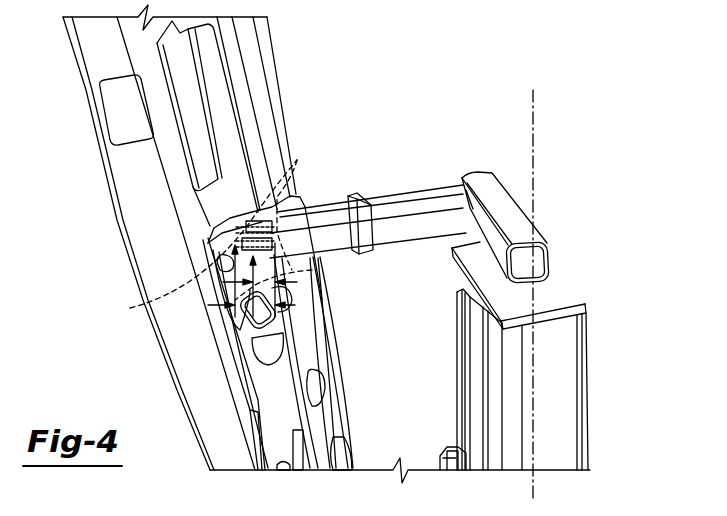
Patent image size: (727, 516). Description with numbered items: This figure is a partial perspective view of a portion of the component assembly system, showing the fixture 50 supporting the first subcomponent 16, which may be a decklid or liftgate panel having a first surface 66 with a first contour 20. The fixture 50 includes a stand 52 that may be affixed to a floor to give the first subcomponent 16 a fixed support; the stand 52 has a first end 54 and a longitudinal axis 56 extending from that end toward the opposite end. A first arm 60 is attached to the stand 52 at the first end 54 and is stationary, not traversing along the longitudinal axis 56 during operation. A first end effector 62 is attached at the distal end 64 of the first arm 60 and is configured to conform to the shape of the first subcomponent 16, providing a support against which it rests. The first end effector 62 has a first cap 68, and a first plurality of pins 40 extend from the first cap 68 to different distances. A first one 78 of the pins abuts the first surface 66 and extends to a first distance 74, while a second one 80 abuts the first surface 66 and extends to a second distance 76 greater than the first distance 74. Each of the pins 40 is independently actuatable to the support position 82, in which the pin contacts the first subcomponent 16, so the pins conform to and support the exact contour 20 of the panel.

The first subcomponent 16 is at (106, 197).
The first contour 20 is at (233, 221).
The first plurality of pins 40 is at (290, 168).
The fixture 50 is at (567, 246).
The stand 52 is at (588, 441).
The first end 54 is at (598, 338).
The longitudinal axis 56 is at (533, 108).
The first arm 60 is at (497, 200).
The first end effector 62 is at (408, 208).
The distal end 64 is at (463, 165).
The first surface 66 is at (196, 236).
The first cap 68 is at (326, 210).
The first distance 74 is at (297, 282).
The second distance 76 is at (295, 305).
The first one of the first plurality of pins 78 is at (312, 270).
The second one of the first plurality of pins 80 is at (150, 303).
The support position 82 is at (190, 224).